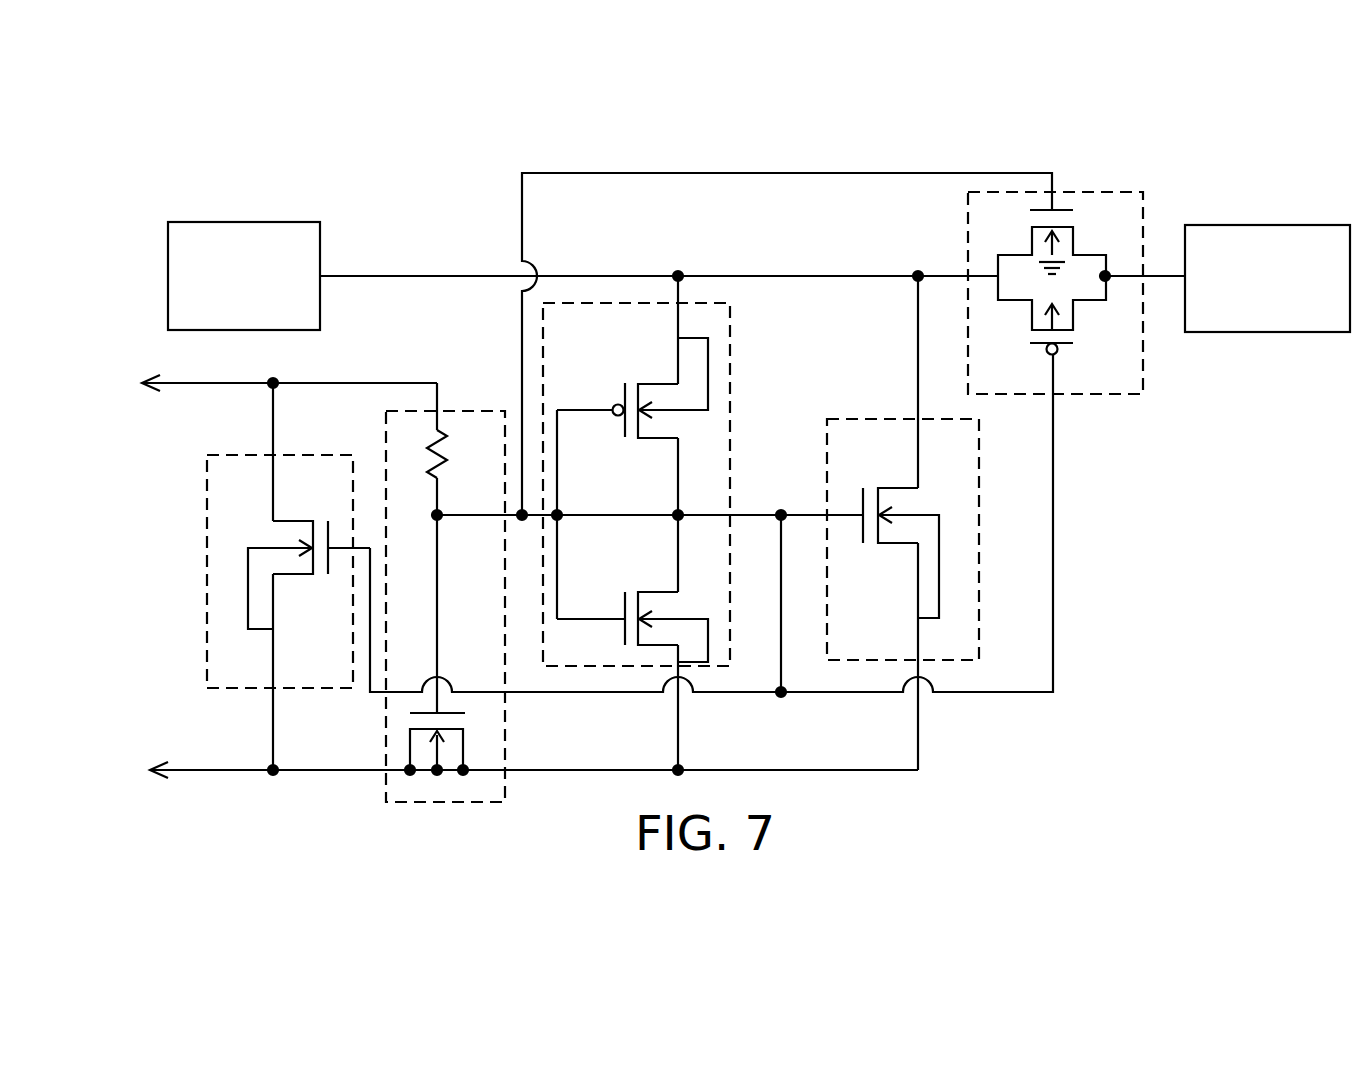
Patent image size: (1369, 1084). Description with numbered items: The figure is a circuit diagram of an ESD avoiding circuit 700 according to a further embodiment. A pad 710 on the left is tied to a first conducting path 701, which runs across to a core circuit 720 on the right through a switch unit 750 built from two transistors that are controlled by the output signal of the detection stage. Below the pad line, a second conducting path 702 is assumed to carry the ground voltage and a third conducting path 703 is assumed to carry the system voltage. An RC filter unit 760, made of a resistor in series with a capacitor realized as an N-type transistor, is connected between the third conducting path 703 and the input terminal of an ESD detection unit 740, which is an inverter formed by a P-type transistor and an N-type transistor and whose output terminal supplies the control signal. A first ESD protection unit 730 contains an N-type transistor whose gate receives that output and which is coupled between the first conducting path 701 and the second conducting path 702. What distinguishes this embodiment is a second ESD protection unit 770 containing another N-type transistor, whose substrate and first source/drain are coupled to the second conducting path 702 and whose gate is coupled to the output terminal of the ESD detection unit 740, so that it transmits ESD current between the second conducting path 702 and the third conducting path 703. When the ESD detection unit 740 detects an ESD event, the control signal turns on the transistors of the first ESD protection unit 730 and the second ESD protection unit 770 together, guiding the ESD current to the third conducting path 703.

The ESD avoiding circuit 700 is at (1222, 777).
The first conducting path 701 is at (403, 275).
The second conducting path 702 is at (218, 772).
The third conducting path 703 is at (204, 383).
The pad 710 is at (215, 222).
The core circuit 720 is at (1268, 225).
The first ESD protection unit 730 is at (980, 508).
The ESD detection unit 740 is at (730, 330).
The switch unit 750 is at (1143, 215).
The RC filter unit 760 is at (475, 410).
The second ESD protection unit 770 is at (207, 590).